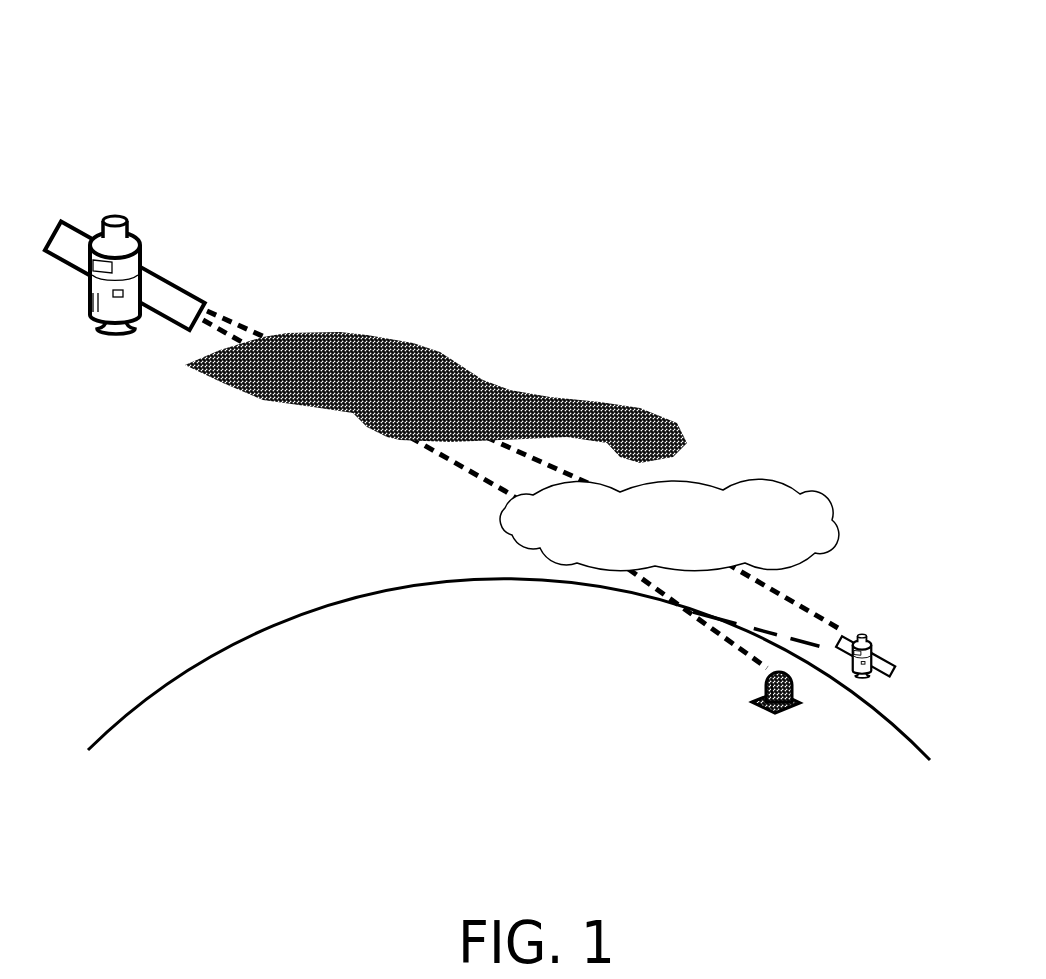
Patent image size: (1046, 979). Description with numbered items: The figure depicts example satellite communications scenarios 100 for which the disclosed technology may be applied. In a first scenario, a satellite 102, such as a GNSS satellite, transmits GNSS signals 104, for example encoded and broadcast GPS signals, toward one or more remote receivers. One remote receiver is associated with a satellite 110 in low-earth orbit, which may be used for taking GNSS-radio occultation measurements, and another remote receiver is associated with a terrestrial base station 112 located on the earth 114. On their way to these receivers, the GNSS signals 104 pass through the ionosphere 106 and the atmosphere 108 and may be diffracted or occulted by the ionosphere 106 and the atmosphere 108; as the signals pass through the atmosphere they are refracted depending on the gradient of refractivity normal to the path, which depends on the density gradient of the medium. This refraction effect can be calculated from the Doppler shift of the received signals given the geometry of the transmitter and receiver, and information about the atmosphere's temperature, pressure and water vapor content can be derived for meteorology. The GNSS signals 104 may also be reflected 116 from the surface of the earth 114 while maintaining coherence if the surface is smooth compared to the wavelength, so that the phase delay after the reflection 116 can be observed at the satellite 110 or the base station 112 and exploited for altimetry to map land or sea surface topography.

The satellite communications scenarios 100 is at (553, 74).
The satellite 102 is at (140, 242).
The GNSS signals 104 is at (535, 465).
The ionosphere 106 is at (338, 375).
The atmosphere 108 is at (677, 520).
The satellite in low-earth orbit 110 is at (896, 665).
The terrestrial base station 112 is at (765, 712).
The earth 114 is at (432, 651).
The reflection 116 is at (797, 637).